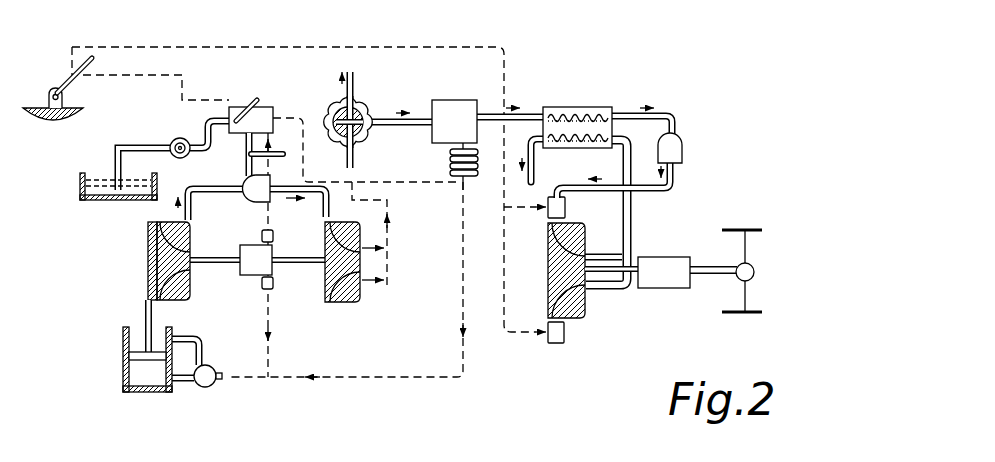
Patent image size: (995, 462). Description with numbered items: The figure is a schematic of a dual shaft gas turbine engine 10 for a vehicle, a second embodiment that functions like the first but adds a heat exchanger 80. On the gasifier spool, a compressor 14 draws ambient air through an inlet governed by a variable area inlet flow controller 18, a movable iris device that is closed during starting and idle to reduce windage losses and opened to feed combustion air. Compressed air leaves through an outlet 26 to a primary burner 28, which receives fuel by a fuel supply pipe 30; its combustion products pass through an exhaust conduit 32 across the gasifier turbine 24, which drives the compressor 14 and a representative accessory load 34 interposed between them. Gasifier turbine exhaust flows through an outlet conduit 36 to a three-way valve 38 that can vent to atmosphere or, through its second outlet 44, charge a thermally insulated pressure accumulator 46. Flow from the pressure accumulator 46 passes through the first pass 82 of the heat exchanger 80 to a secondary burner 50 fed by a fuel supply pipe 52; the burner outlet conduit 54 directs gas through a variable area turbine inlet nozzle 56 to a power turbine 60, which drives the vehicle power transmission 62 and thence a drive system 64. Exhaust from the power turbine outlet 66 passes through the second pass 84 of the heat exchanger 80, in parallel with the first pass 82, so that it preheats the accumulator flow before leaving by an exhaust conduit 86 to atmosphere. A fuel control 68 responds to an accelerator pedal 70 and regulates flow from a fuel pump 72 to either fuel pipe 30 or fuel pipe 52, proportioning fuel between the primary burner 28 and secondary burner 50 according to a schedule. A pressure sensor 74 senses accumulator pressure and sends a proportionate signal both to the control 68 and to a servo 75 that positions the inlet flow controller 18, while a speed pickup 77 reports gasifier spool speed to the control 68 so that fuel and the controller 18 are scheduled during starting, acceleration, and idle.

The dual shaft gas turbine engine 10 is at (489, 43).
The compressor 14 is at (192, 241).
The variable area inlet flow controller 18 is at (148, 250).
The gasifier turbine 24 is at (344, 291).
The outlet 26 is at (193, 203).
The primary burner 28 is at (273, 183).
The fuel supply pipe 30 is at (246, 171).
The exhaust conduit 32 is at (323, 209).
The accessory load 34 is at (248, 268).
The outlet conduit 36 is at (354, 162).
The three-way valve 38 is at (367, 101).
The second outlet 44 is at (415, 128).
The pressure accumulator 46 is at (451, 100).
The secondary burner 50 is at (683, 152).
The fuel supply pipe 52 is at (681, 129).
The outlet conduit 54 is at (652, 192).
The variable area turbine inlet nozzle 56 is at (567, 333).
The power turbine 60 is at (554, 270).
The vehicle power transmission 62 is at (665, 257).
The drive system 64 is at (753, 269).
The outlet 66 is at (634, 143).
The fuel control 68 is at (265, 106).
The accelerator pedal 70 is at (68, 72).
The fuel pump 72 is at (172, 139).
The pressure sensor 74 is at (456, 180).
The servo 75 is at (133, 393).
The speed pickup 77 is at (275, 243).
The heat exchanger 80 is at (608, 105).
The first pass 82 is at (567, 107).
The second pass 84 is at (596, 149).
The exhaust conduit 86 is at (529, 183).